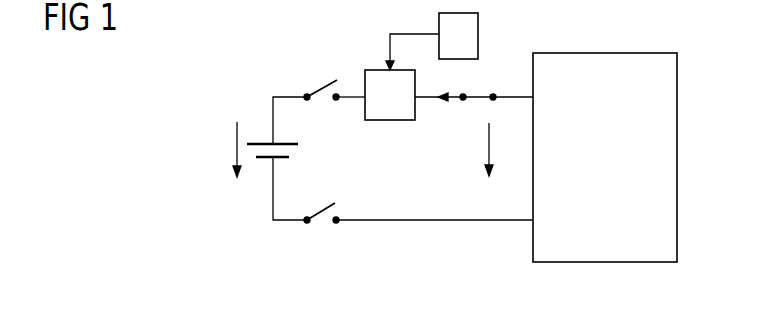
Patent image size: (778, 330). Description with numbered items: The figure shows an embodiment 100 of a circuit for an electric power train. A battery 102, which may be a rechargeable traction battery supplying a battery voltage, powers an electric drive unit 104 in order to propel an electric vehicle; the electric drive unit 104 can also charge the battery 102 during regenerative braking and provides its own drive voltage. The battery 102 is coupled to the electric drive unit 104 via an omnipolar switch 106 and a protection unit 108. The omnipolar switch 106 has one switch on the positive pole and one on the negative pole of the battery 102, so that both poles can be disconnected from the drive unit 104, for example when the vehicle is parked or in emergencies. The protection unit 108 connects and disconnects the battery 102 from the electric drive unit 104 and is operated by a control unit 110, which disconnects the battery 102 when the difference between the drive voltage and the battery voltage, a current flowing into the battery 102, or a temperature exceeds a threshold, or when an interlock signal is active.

The circuit 100 is at (464, 168).
The battery 102 is at (267, 168).
The electric drive unit 104 is at (678, 93).
The omnipolar switch 106 is at (320, 80).
The protection unit 108 is at (392, 120).
The control unit 110 is at (478, 25).